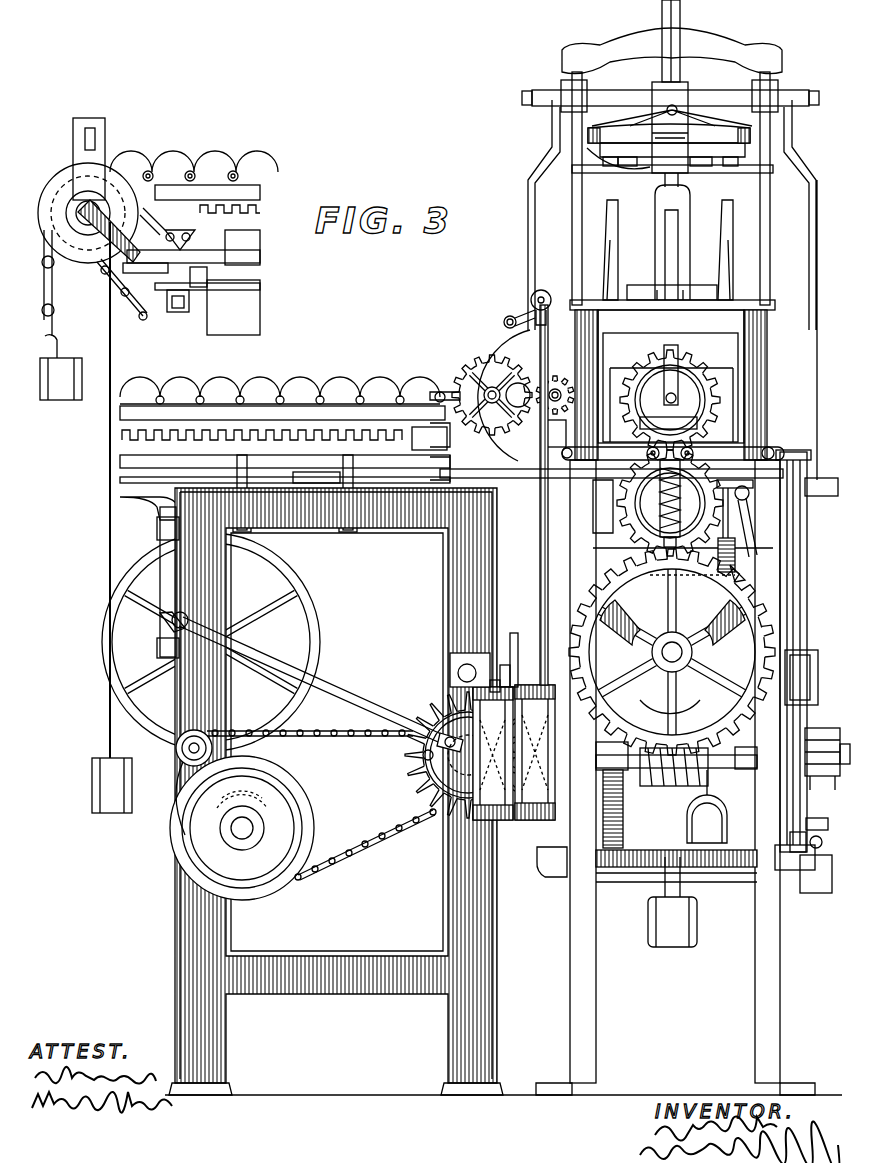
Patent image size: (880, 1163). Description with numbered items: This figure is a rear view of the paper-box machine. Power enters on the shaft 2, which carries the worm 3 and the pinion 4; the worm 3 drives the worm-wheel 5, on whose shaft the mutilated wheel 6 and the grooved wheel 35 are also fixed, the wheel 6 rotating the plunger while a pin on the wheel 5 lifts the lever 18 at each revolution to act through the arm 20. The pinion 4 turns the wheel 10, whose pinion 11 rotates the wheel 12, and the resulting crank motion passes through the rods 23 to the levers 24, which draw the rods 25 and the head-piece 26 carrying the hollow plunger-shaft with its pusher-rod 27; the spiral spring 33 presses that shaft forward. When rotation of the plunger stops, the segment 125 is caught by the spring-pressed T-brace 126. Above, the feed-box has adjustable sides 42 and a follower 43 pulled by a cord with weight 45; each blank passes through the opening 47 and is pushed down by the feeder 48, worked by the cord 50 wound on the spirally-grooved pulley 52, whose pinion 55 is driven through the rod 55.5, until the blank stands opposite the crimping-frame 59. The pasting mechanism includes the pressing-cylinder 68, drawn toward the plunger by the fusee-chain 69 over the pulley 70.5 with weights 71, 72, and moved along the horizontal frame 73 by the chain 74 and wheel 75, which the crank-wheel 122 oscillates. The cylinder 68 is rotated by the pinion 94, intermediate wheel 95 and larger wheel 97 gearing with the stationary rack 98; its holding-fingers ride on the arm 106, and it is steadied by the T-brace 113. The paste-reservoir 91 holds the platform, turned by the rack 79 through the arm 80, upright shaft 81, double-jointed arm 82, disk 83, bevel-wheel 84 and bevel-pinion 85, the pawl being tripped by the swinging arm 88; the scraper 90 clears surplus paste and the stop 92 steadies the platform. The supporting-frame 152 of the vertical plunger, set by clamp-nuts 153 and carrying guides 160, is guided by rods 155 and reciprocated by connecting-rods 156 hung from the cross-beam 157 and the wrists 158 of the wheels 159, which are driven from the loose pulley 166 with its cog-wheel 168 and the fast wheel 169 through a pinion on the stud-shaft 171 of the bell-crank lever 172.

The guide pulley 70.5 is at (89, 190).
The fusee-chain 69 is at (277, 275).
The horizontal frame 73 is at (290, 303).
The stationary rack 98 is at (286, 327).
The scraper 90 is at (285, 356).
The stop 92 is at (167, 229).
The arm 80 is at (285, 404).
The rack 79 is at (178, 301).
The chain 74 is at (126, 296).
The weight 72 is at (61, 315).
The weight 71 is at (112, 517).
The wheel 75 is at (211, 642).
The paste-reservoir 91 is at (499, 687).
The crank-wheel 122 is at (242, 828).
The upright shaft 81 is at (183, 704).
The double-jointed arm 82 is at (305, 682).
The disk 83 is at (381, 773).
The bevel-pinion 85 is at (514, 752).
The bevel-wheel 84 is at (461, 680).
The spiral spring 33 is at (520, 660).
The curved swinging arm 88 is at (503, 676).
The larger wheel 97 is at (491, 394).
The intermediate wheel 95 is at (519, 386).
The pinion 94 is at (556, 409).
The pressing-cylinder 68 is at (504, 395).
The rod 55.5 is at (559, 495).
The pinion 55 is at (552, 307).
The arm 106 is at (509, 324).
The yielding T-brace 113 is at (500, 317).
The connecting-rods 156 is at (671, 583).
The cross-beam 157 is at (670, 70).
The cord 50 is at (675, 53).
The transverse slot 47 is at (672, 115).
The feeder 48 is at (670, 134).
The supporting-frame 152 is at (672, 148).
The clamp-nuts 153 is at (717, 154).
The guides 160 is at (627, 156).
The rods 155 is at (659, 157).
The spirally-grooved pulley 52 is at (618, 158).
The sides of the feed-box 42 is at (666, 250).
The follower 43 is at (672, 242).
The crimping-frame 59 is at (671, 380).
The segment 125 is at (683, 376).
The T-brace 126 is at (668, 423).
The rods 25 is at (679, 449).
The arm 20 is at (611, 478).
The pusher-rod 27 is at (670, 503).
The head-piece 26 is at (740, 521).
The levers 24 is at (748, 553).
The wheels 159 is at (803, 660).
The wrists 158 is at (821, 485).
The mutilated wheel 6 is at (671, 651).
The worm-wheel 5 is at (672, 610).
The lever 18 is at (692, 573).
The wheel 12 is at (738, 573).
The wheel 35 is at (670, 699).
The shaft 2 is at (676, 762).
The pinion 11 is at (746, 754).
The pinion 4 is at (612, 755).
The worm 3 is at (674, 772).
The wheel 10 is at (620, 809).
The weight 45 is at (707, 806).
The rods 23 is at (808, 677).
The loose pulley 166 is at (827, 745).
The cog-wheel 168 is at (815, 787).
The fast wheel 169 is at (841, 788).
The bell-crank lever 172 is at (817, 827).
The stud-shaft 171 is at (816, 874).